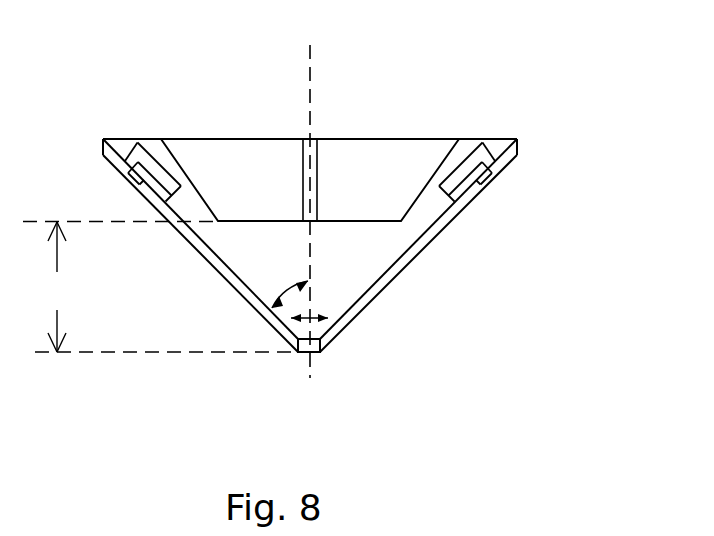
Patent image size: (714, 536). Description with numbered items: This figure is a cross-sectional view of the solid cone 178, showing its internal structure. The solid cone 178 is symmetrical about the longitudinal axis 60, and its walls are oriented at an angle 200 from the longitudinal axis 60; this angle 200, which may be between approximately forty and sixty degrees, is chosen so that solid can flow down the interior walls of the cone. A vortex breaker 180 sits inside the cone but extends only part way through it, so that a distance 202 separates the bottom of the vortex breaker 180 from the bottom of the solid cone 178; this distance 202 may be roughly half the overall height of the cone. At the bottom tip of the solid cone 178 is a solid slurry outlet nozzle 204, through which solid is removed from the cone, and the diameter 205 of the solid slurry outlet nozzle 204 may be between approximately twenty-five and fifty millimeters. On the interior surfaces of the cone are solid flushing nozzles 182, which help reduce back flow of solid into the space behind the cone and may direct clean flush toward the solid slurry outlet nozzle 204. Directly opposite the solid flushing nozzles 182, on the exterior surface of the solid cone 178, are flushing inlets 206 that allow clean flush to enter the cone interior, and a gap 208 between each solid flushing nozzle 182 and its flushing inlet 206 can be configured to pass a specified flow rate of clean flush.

The solid cone 178 is at (493, 52).
The longitudinal axis 60 is at (308, 102).
The vortex breaker 180 is at (350, 170).
The solid flushing nozzles 182 is at (468, 157).
The angle 200 is at (268, 303).
The distance 202 is at (160, 287).
The solid slurry outlet nozzle 204 is at (312, 352).
The diameter 205 is at (312, 312).
The flushing inlets 206 is at (488, 182).
The gap 208 is at (455, 193).